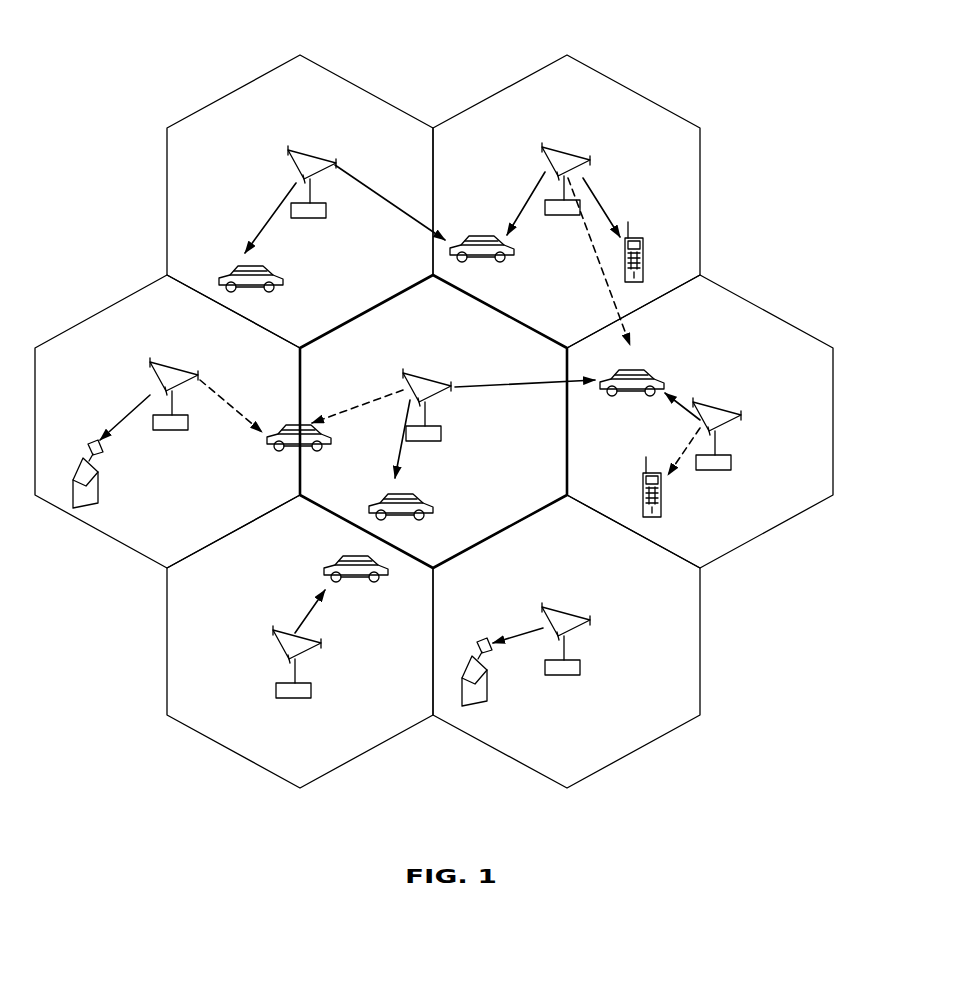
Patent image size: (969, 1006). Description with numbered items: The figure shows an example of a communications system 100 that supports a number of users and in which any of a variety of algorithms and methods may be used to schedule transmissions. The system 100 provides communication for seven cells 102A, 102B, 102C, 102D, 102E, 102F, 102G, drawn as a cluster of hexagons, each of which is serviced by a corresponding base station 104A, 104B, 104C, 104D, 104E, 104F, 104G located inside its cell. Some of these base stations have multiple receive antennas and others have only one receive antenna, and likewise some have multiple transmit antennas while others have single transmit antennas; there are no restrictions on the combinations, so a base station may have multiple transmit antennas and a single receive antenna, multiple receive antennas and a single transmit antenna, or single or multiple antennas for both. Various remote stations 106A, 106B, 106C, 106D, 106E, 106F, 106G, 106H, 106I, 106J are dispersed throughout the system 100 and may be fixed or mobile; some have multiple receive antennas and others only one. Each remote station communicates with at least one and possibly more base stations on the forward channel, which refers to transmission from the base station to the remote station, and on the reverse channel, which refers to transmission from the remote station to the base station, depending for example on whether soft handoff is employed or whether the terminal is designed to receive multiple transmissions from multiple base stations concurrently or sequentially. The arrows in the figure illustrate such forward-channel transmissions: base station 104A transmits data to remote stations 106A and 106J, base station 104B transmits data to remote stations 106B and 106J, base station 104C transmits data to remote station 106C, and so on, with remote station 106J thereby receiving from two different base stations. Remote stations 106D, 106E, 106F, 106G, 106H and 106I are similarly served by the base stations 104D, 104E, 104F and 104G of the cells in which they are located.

The communications system 100 is at (752, 44).
The cell 102A is at (243, 85).
The cell 102B is at (623, 86).
The cell 102C is at (93, 315).
The cell 102D is at (460, 320).
The cell 102E is at (833, 418).
The cell 102F is at (167, 648).
The cell 102G is at (702, 618).
The base station 104A is at (297, 150).
The base station 104B is at (552, 152).
The base station 104C is at (162, 370).
The base station 104D is at (415, 377).
The base station 104E is at (703, 405).
The base station 104F is at (275, 630).
The base station 104G is at (553, 612).
The remote station 106A is at (247, 267).
The remote station 106B is at (628, 238).
The remote station 106C is at (90, 445).
The remote station 106D is at (398, 493).
The remote station 106E is at (637, 367).
The remote station 106F is at (352, 555).
The remote station 106G is at (475, 642).
The remote station 106H is at (283, 425).
The remote station 106I is at (647, 468).
The remote station 106J is at (485, 237).